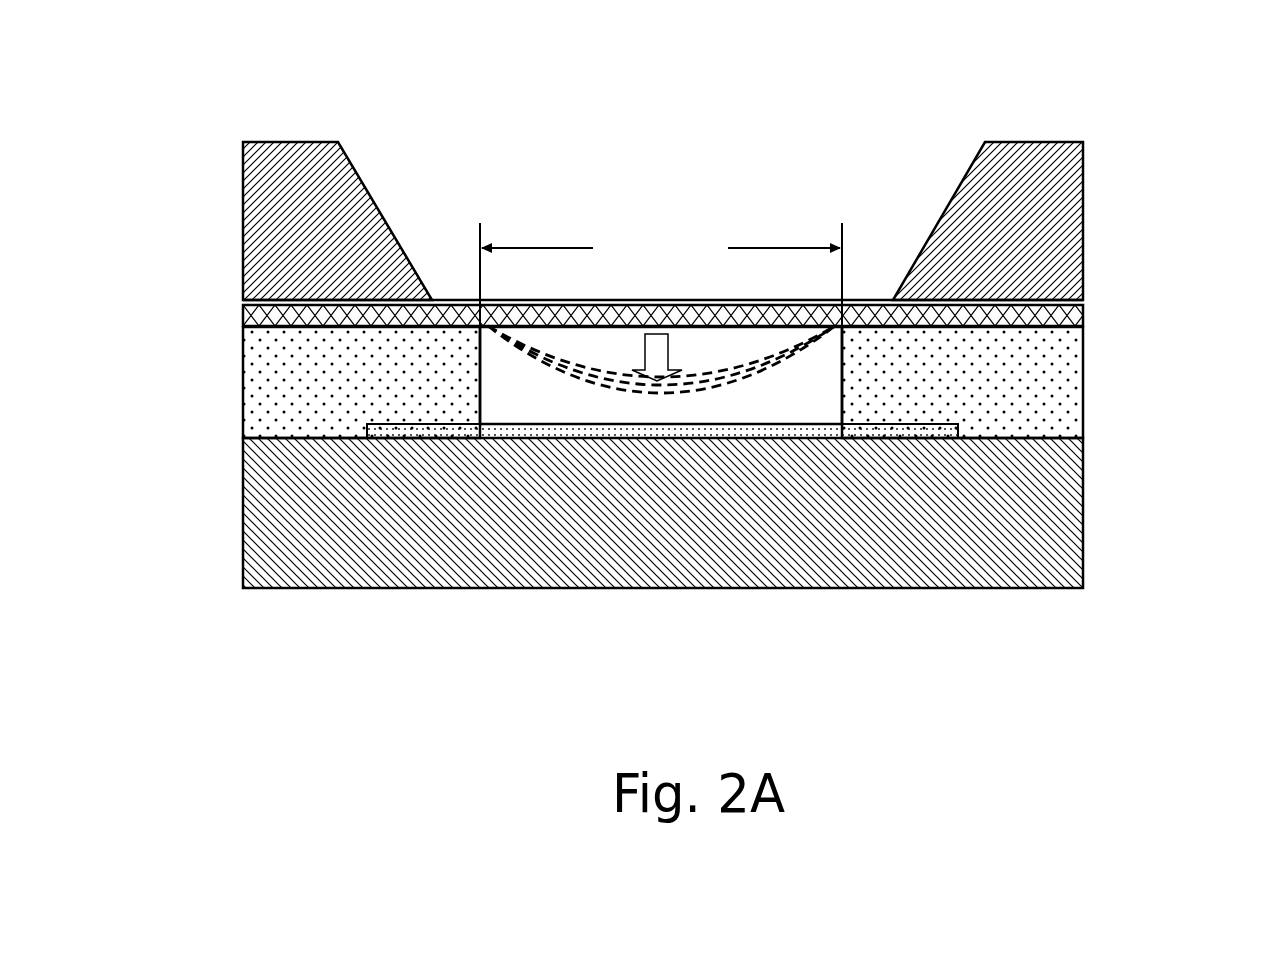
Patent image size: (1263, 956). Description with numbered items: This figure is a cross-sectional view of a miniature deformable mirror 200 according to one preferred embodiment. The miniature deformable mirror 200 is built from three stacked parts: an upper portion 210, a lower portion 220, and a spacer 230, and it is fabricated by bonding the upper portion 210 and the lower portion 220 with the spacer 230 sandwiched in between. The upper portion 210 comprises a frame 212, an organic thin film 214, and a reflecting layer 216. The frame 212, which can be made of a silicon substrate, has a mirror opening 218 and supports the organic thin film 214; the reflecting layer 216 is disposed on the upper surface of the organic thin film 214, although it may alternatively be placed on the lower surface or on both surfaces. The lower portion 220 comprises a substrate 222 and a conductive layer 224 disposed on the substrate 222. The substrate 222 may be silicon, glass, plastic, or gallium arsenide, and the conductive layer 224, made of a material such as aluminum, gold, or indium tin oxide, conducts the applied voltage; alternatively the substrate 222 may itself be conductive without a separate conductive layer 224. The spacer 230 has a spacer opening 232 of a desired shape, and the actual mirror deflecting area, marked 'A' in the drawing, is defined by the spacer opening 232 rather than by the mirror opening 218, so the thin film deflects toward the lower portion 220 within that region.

The miniature deformable mirror 200 is at (418, 45).
The upper portion 210 is at (1176, 138).
The frame 212 is at (1050, 192).
The organic thin film 214 is at (1083, 322).
The reflecting layer 216 is at (945, 300).
The mirror opening 218 is at (893, 208).
The lower portion 220 is at (160, 473).
The substrate 222 is at (270, 538).
The conductive layer 224 is at (385, 433).
The spacer 230 is at (275, 410).
The spacer opening 232 is at (786, 394).